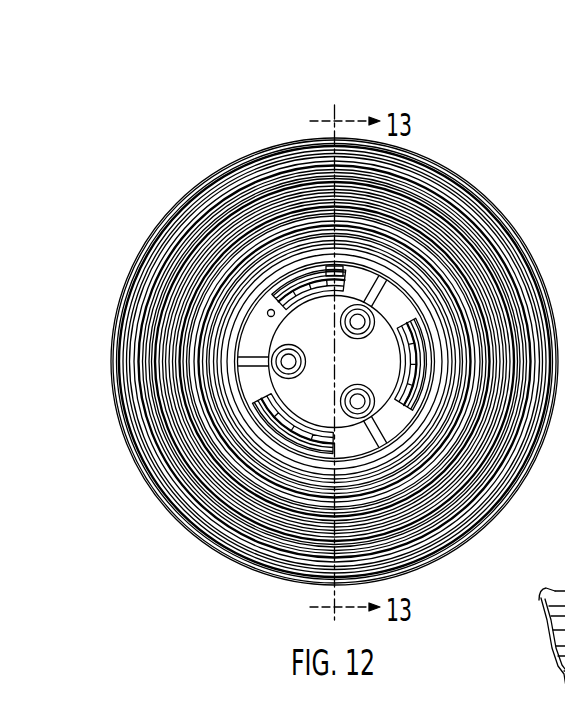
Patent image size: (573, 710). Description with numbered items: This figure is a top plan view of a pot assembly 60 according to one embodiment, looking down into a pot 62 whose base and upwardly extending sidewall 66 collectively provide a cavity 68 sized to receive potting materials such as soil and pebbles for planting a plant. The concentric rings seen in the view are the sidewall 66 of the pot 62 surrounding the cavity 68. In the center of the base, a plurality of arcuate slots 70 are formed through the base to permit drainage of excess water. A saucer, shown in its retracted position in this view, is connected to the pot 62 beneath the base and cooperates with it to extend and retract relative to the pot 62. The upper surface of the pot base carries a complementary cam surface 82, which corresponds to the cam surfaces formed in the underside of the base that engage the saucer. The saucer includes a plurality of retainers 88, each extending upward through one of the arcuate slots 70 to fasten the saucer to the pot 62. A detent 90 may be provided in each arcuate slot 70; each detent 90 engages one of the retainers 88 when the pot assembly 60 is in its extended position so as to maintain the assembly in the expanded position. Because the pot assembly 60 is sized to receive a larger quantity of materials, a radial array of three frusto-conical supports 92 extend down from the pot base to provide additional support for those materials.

The pot assembly 60 is at (449, 111).
The pot 62 is at (456, 158).
The sidewall 66 is at (187, 215).
The cavity 68 is at (250, 188).
The arcuate slots 70 is at (287, 277).
The complementary cam surface 82 is at (248, 328).
The retainers 88 is at (263, 305).
The detent 90 is at (318, 262).
The frusto-conical supports 92 is at (258, 362).